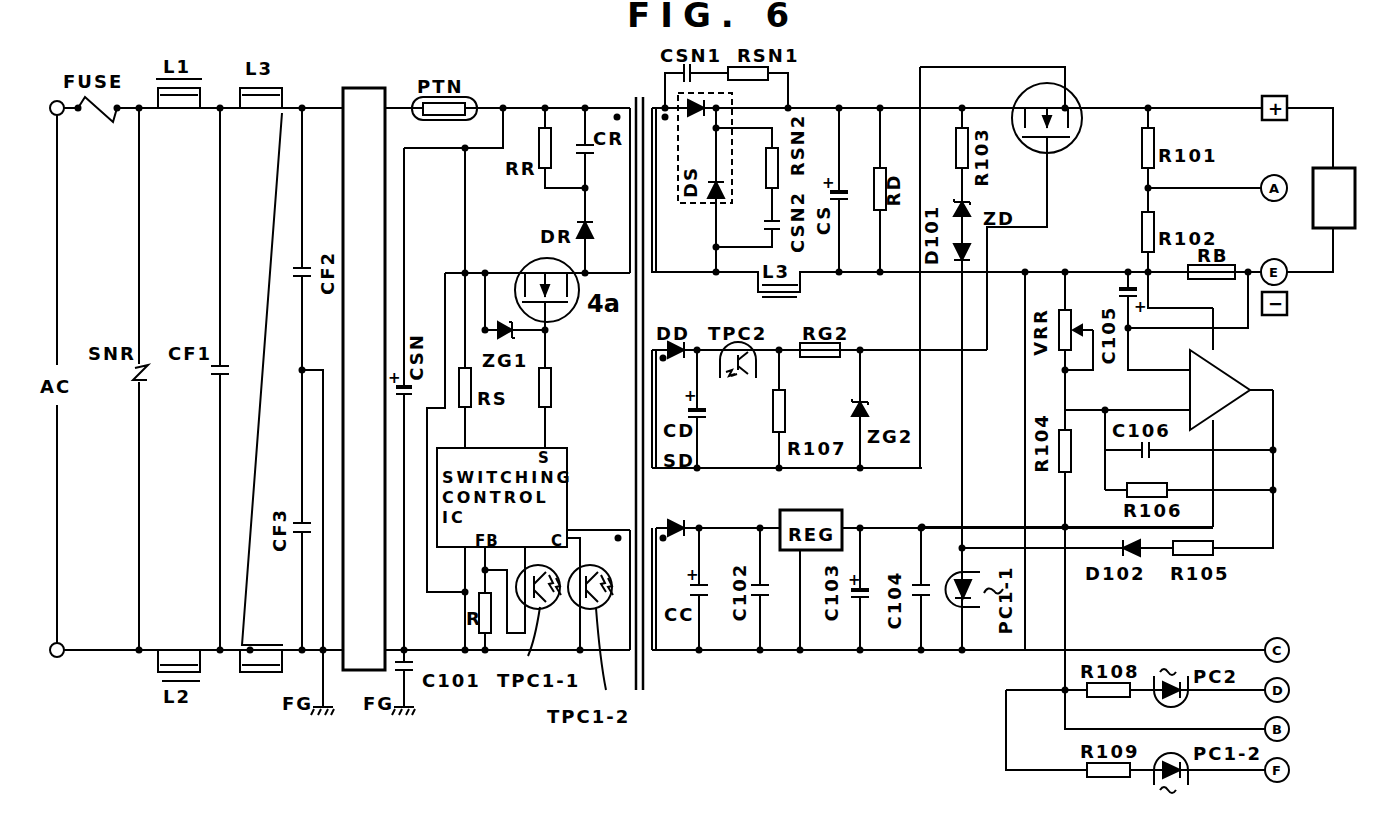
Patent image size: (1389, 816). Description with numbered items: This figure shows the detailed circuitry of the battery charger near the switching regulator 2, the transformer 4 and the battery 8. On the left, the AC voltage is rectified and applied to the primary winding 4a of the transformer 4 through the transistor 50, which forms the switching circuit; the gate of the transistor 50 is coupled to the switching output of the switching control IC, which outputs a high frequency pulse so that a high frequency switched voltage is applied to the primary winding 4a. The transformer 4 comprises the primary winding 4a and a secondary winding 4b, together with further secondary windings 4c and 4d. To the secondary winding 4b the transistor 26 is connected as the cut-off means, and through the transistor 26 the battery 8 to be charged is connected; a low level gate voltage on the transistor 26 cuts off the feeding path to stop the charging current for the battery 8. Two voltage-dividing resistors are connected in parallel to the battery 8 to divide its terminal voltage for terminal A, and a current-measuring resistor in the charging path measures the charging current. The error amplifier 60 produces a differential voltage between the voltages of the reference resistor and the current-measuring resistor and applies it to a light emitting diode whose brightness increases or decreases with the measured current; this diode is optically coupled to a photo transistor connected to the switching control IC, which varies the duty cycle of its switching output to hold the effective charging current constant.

The switching regulator 2 is at (397, 82).
The transformer 4 is at (650, 90).
The primary winding 4a is at (608, 213).
The secondary winding 4b is at (655, 274).
The secondary winding 4c is at (655, 652).
The secondary winding 4d is at (650, 420).
The transistor 50 is at (560, 322).
The transistor 26 is at (1062, 142).
The error amplifier 60 is at (1240, 400).
The battery 8 is at (1340, 172).